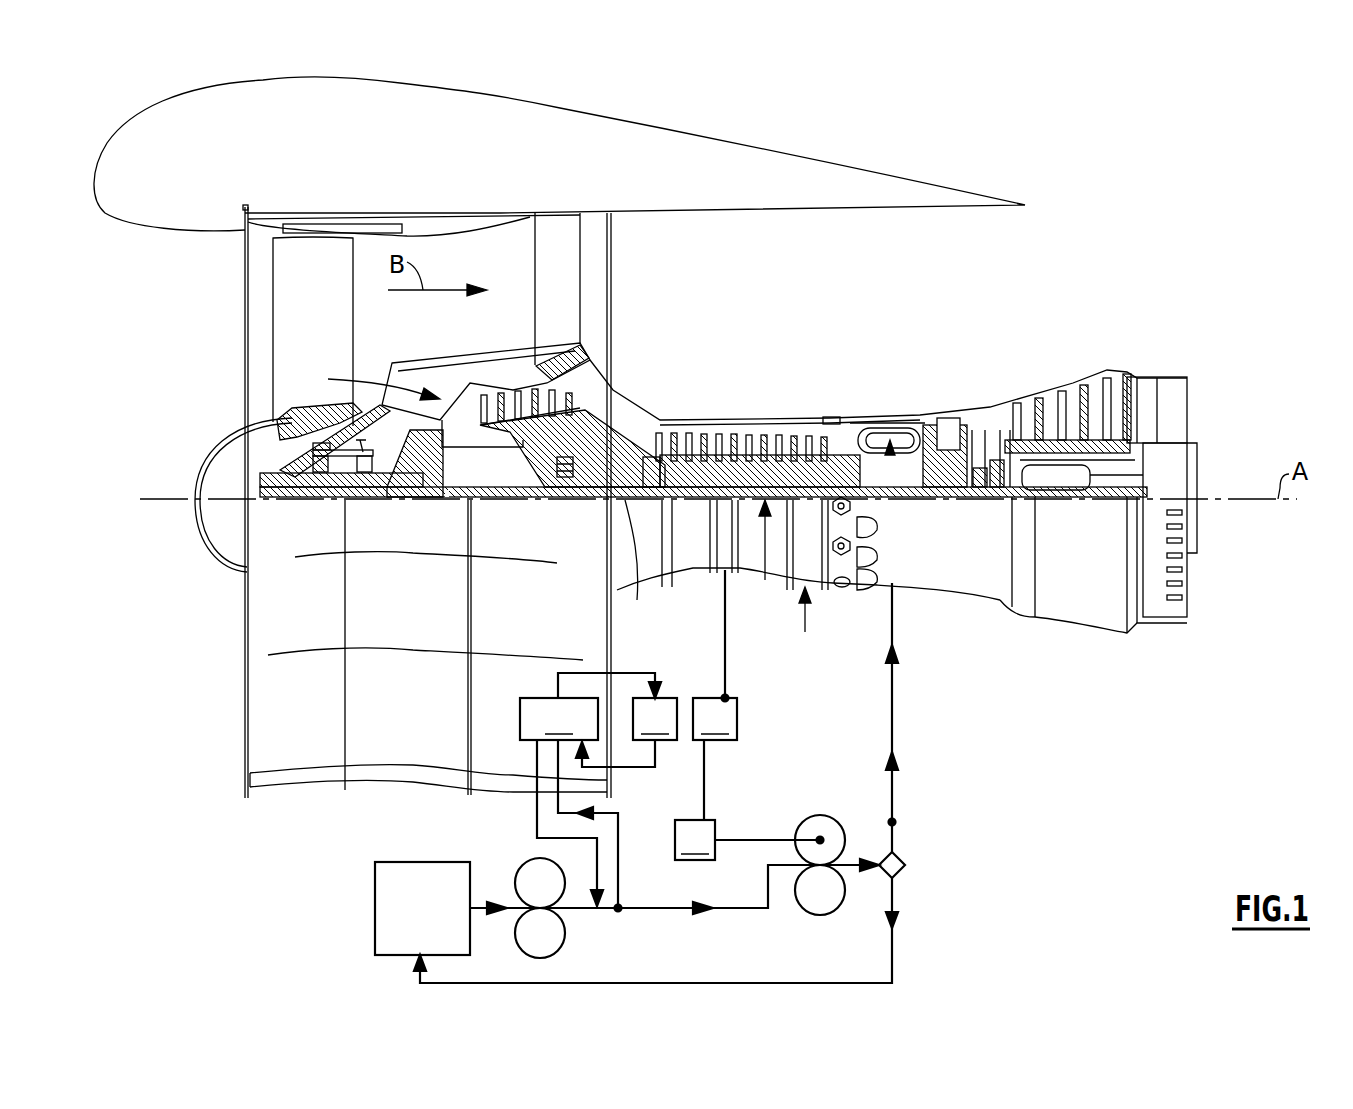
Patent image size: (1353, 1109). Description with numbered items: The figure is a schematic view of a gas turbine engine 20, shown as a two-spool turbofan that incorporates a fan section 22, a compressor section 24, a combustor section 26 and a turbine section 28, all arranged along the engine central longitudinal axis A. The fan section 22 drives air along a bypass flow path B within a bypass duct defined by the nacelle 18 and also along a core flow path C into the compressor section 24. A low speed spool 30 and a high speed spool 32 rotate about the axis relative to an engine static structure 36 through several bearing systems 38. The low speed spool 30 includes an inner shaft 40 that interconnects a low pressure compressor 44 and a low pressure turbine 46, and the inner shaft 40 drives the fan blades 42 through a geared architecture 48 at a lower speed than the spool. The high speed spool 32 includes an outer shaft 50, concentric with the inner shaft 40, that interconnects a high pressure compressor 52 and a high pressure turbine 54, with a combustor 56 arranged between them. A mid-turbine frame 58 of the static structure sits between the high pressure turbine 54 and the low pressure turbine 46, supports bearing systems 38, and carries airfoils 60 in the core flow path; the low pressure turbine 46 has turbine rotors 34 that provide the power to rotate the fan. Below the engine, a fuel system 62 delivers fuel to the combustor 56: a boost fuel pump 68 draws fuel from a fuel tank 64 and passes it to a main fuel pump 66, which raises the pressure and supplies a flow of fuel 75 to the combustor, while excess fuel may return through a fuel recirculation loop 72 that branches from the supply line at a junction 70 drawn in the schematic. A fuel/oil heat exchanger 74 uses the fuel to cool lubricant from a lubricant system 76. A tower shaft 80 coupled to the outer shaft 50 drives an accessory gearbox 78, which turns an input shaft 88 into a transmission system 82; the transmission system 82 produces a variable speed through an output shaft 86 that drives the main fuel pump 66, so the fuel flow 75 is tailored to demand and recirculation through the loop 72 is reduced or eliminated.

The nacelle 18 is at (553, 128).
The gas turbine engine 20 is at (1090, 122).
The fan section 22 is at (232, 188).
The compressor section 24 is at (580, 388).
The combustor section 26 is at (928, 332).
The turbine section 28 is at (1138, 332).
The low speed spool 30 is at (765, 580).
The high speed spool 32 is at (802, 430).
The turbine rotors 34 is at (1088, 465).
The engine static structure 36 is at (805, 625).
The bearing systems 38 is at (323, 500).
The inner shaft 40 is at (630, 588).
The fan blades 42 is at (299, 343).
The low pressure compressor 44 is at (591, 362).
The low pressure turbine 46 is at (1075, 400).
The geared architecture 48 is at (428, 490).
The outer shaft 50 is at (908, 498).
The high pressure compressor 52 is at (725, 462).
The high pressure turbine 54 is at (946, 425).
The combustor 56 is at (878, 440).
The mid-turbine frame 58 is at (993, 402).
The airfoils 60 is at (1027, 465).
The fuel system 62 is at (1005, 863).
The fuel tank 64 is at (375, 884).
The main fuel pump 66 is at (805, 916).
The boost fuel pump 68 is at (558, 938).
The junction 70 is at (895, 823).
The fuel recirculation loop 72 is at (893, 953).
The fuel/oil heat exchanger 74 is at (590, 790).
The flow of fuel 75 is at (912, 765).
The lubricant system 76 is at (626, 732).
The accessory gearbox 78 is at (715, 759).
The tower shaft 80 is at (725, 657).
The transmission system 82 is at (695, 840).
The output shaft 86 is at (751, 840).
The input shaft 88 is at (705, 785).